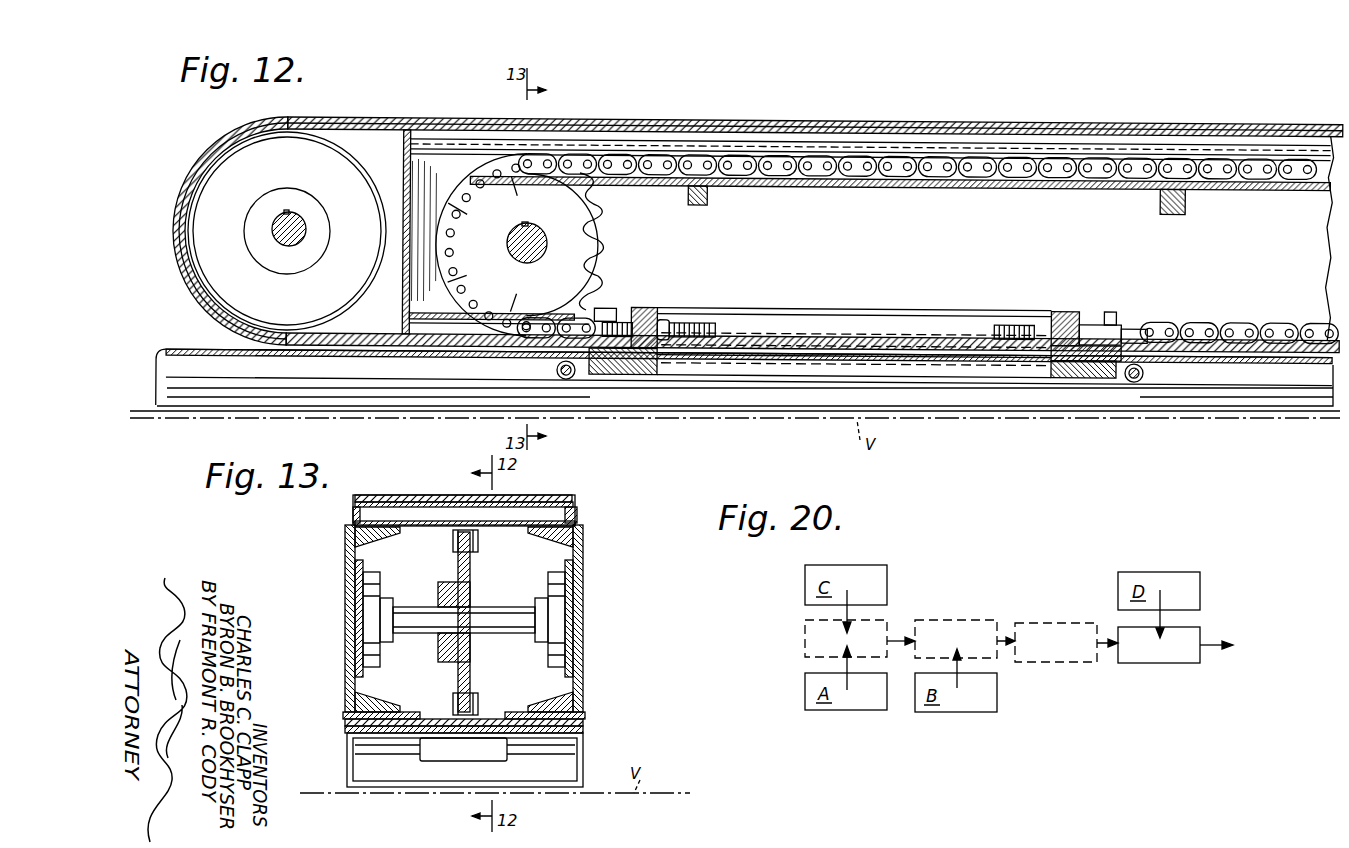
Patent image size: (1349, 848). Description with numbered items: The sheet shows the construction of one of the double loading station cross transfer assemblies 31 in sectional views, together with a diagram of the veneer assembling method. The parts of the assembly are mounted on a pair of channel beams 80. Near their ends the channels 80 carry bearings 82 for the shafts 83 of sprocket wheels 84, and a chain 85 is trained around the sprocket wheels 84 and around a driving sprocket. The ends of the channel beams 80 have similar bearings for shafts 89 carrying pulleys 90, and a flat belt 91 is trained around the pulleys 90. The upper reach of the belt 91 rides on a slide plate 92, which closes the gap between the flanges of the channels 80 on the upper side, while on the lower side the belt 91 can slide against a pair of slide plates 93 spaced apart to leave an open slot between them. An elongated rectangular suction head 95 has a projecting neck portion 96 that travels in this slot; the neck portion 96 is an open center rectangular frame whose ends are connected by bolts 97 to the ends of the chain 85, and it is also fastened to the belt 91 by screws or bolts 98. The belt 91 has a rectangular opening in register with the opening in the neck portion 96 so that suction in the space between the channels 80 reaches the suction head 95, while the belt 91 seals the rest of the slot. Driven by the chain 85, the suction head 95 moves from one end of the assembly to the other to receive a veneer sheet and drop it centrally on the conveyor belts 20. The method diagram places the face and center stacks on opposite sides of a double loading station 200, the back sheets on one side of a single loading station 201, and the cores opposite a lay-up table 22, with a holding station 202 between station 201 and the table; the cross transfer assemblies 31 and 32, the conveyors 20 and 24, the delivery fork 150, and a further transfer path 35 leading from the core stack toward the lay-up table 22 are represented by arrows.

In FIG. 12, the channel beams 80 is at (858, 262).
In FIG. 13, the channel beams 80 is at (583, 552).
In FIG. 13, the bearings 82 is at (355, 621).
In FIG. 12, the shafts 83 is at (543, 233).
In FIG. 13, the shafts 83 is at (412, 606).
In FIG. 12, the sprocket wheels 84 is at (608, 238).
In FIG. 13, the sprocket wheels 84 is at (472, 652).
In FIG. 12, the chain 85 is at (838, 172).
In FIG. 13, the chain 85 is at (478, 535).
In FIG. 12, the shafts 89 is at (280, 232).
In FIG. 12, the pulleys 90 is at (197, 173).
In FIG. 12, the flat belt 91 is at (743, 120).
In FIG. 13, the flat belt 91 is at (538, 496).
In FIG. 13, the slide plate 92 is at (576, 511).
In FIG. 13, the slide plates 93 is at (343, 714).
In FIG. 12, the suction head 95 is at (200, 350).
In FIG. 13, the suction head 95 is at (347, 760).
In FIG. 12, the neck portion 96 is at (647, 305).
In FIG. 12, the bolts 97 is at (607, 305).
In FIG. 12, the screws or bolts 98 is at (656, 374).
In FIG. 13, the double loading station cross transfer assemblies 31 is at (324, 542).
In FIG. 20, the double loading station cross transfer assemblies 31 is at (847, 615).
In FIG. 20, the conveyor belts 20 is at (893, 636).
In FIG. 20, the lay-up table 22 is at (1152, 665).
In FIG. 20, the conveyor 24 is at (1210, 640).
In FIG. 20, the cross transfer assembly 32 is at (960, 670).
In FIG. 20, the feed line from D 35 is at (1160, 616).
In FIG. 20, the delivery fork 150 is at (1002, 640).
In FIG. 20, the double loading station 200 is at (805, 643).
In FIG. 20, the single loading station 201 is at (952, 628).
In FIG. 20, the holding station 202 is at (1040, 664).